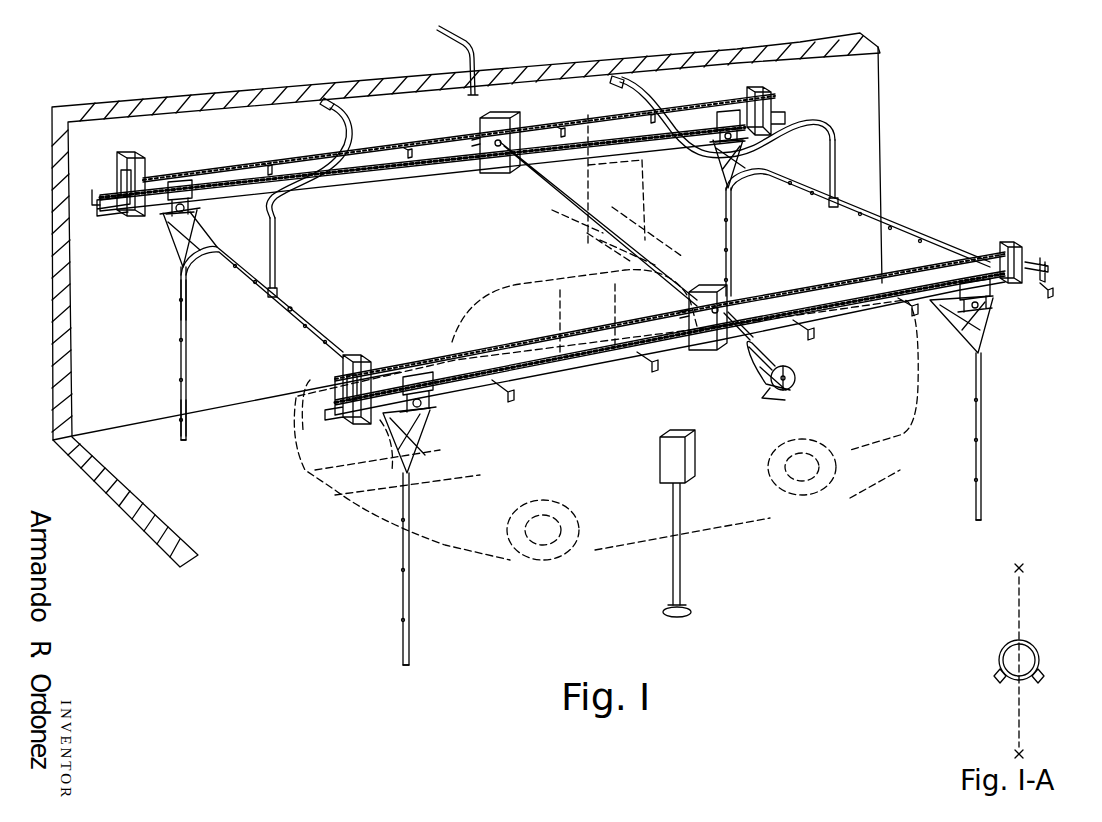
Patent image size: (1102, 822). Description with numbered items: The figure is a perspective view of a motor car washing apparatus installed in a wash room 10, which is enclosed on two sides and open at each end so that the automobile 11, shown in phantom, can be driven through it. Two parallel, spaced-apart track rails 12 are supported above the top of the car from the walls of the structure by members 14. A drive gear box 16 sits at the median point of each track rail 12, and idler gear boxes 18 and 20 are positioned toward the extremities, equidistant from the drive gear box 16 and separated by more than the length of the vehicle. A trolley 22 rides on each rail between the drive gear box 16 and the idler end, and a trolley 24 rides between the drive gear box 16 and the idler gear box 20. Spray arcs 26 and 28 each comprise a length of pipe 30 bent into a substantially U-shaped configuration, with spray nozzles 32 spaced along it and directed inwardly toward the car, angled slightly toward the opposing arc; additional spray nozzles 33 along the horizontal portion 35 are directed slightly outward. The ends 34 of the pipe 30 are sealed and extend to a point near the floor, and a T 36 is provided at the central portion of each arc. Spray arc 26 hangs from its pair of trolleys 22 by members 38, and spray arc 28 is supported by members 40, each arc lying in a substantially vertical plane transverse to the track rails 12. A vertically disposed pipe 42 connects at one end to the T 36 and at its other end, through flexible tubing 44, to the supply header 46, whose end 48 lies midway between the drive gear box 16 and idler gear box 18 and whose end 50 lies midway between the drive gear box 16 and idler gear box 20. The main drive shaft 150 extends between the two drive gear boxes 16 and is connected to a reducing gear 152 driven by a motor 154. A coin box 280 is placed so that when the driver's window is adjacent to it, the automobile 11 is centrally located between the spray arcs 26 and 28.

In FIG. 1, the wash room 10 is at (52, 176).
In FIG. 1, the automobile 11 is at (622, 526).
In FIG. 1, the track rails 12 is at (109, 214).
In FIG. 1, the members 14 is at (100, 190).
In FIG. 1, the drive gear box 16 is at (480, 120).
In FIG. 1, the idler gear box 18 is at (140, 155).
In FIG. 1, the idler gear box 20 is at (764, 90).
In FIG. 1, the trolley 22 is at (182, 180).
In FIG. 1, the trolley 24 is at (730, 110).
In FIG. 1, the spray arc 26 is at (187, 378).
In FIG. 1, the spray arc 28 is at (733, 244).
In FIG. 1, the pipe 30 is at (190, 428).
In FIG. 1, the spray nozzles 32 is at (188, 327).
In FIG. 1-A, the spray nozzles 32 is at (1042, 672).
In FIG. 1, the spray nozzles 33 is at (287, 311).
In FIG. 1-A, the spray nozzles 33 is at (998, 672).
In FIG. 1, the ends 34 is at (188, 441).
In FIG. 1, the horizontal portion 35 is at (312, 326).
In FIG. 1-A, the horizontal portion 35 is at (1033, 650).
In FIG. 1, the T 36 is at (280, 292).
In FIG. 1, the members 38 is at (206, 230).
In FIG. 1, the members 40 is at (716, 166).
In FIG. 1, the pipe 42 is at (280, 222).
In FIG. 1, the flexible tubing 44 is at (330, 148).
In FIG. 1, the supply header 46 is at (498, 94).
In FIG. 1, the end 48 is at (320, 104).
In FIG. 1, the end 50 is at (626, 81).
In FIG. 1, the main drive shaft 150 is at (545, 172).
In FIG. 1, the reducing gear 152 is at (750, 352).
In FIG. 1, the motor 154 is at (782, 386).
In FIG. 1, the coin box 280 is at (696, 452).